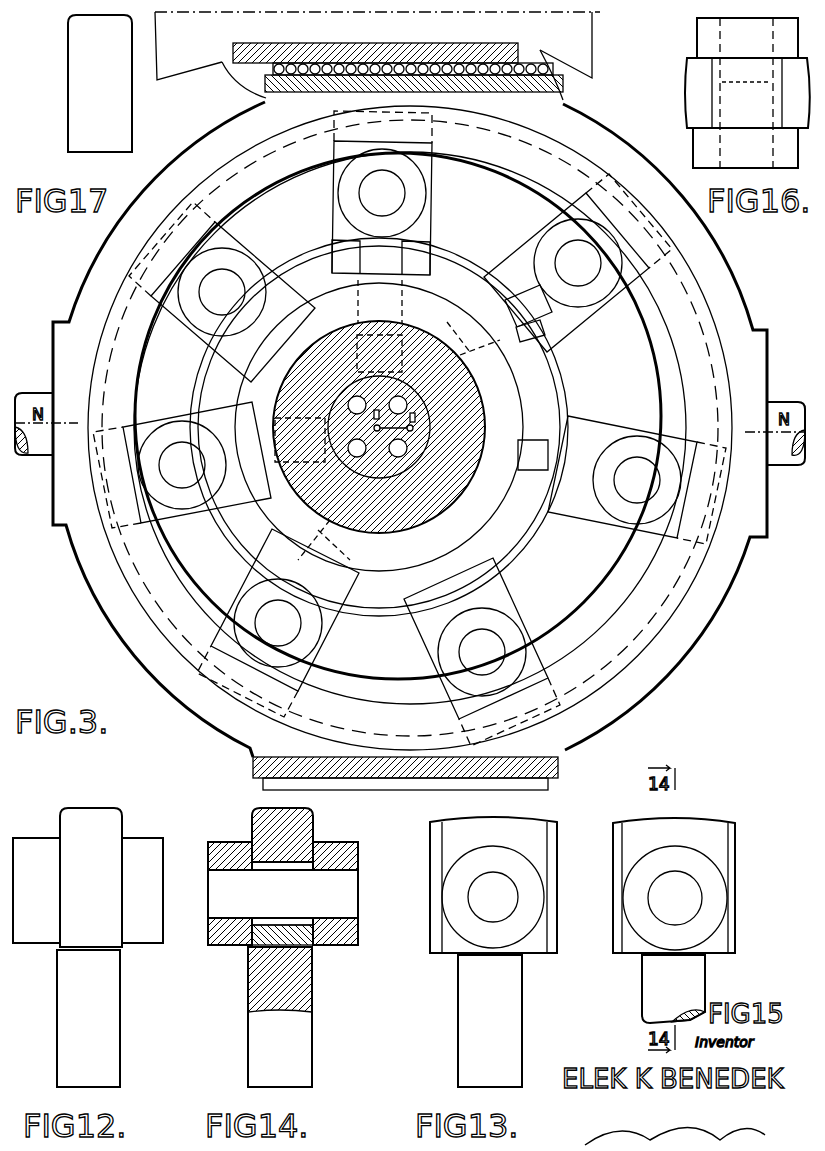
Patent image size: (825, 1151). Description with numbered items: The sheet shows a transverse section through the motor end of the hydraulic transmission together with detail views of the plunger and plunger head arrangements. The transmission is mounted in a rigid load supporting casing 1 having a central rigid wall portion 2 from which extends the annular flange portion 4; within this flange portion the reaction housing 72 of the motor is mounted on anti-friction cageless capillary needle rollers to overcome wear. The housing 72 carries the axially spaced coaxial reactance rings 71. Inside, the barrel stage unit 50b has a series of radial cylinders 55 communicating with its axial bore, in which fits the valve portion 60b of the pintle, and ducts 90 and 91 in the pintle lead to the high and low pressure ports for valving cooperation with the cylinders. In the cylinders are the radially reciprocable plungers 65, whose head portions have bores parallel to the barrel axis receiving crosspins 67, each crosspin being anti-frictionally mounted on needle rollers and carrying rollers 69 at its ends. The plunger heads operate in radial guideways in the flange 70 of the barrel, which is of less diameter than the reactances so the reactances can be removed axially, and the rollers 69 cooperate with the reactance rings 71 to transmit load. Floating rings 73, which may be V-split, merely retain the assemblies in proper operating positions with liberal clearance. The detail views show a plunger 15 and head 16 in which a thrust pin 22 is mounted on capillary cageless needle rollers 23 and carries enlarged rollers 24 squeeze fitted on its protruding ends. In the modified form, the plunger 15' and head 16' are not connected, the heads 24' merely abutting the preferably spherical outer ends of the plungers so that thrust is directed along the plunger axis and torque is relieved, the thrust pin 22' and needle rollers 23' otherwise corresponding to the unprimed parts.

In FIG. 3, the annular flange portion 4 is at (588, 50).
In FIG. 3, the reaction housing 72 is at (578, 118).
In FIG. 3, the reactance rings 71 is at (617, 610).
In FIG. 3, the flange 70 is at (605, 580).
In FIG. 3, the floating rings 73 is at (455, 255).
In FIG. 3, the rollers 69 is at (428, 195).
In FIG. 3, the crosspins 67 is at (409, 422).
In FIG. 3, the plungers 65 is at (560, 362).
In FIG. 3, the radial cylinders 55 is at (399, 420).
In FIG. 3, the stage unit of the barrel 50b is at (470, 405).
In FIG. 3, the valve portion of the pintle 60b is at (369, 426).
In FIG. 3, the ducts 90 is at (360, 390).
In FIG. 3, the ducts 91 is at (360, 462).
In FIG. 3, the load supporting casing 1 is at (380, 417).
In FIG. 3, the central rigid wall portion 2 is at (399, 423).
In FIG. 12, the plunger 15 is at (108, 1018).
In FIG. 13, the plunger 15 is at (471, 1021).
In FIG. 17, the plunger 15' is at (119, 83).
In FIG. 14, the plunger 15' is at (300, 1017).
In FIG. 15, the plunger 15' is at (697, 989).
In FIG. 16, the head 16 is at (731, 96).
In FIG. 12, the head 16 is at (111, 877).
In FIG. 13, the head 16 is at (478, 896).
In FIG. 14, the head 16' is at (307, 835).
In FIG. 15, the head 16' is at (697, 885).
In FIG. 16, the thrust pin 22 is at (714, 93).
In FIG. 13, the thrust pin 22 is at (456, 897).
In FIG. 14, the thrust pin 22' is at (325, 904).
In FIG. 15, the thrust pin 22' is at (651, 927).
In FIG. 16, the needle rollers 23 is at (711, 94).
In FIG. 14, the needle rollers 23' is at (307, 948).
In FIG. 16, the rollers 24 is at (731, 93).
In FIG. 12, the rollers 24 is at (108, 899).
In FIG. 14, the rollers 24 is at (205, 960).
In FIG. 13, the rollers 24 is at (479, 911).
In FIG. 14, the heads 24' is at (303, 893).
In FIG. 15, the heads 24' is at (699, 888).